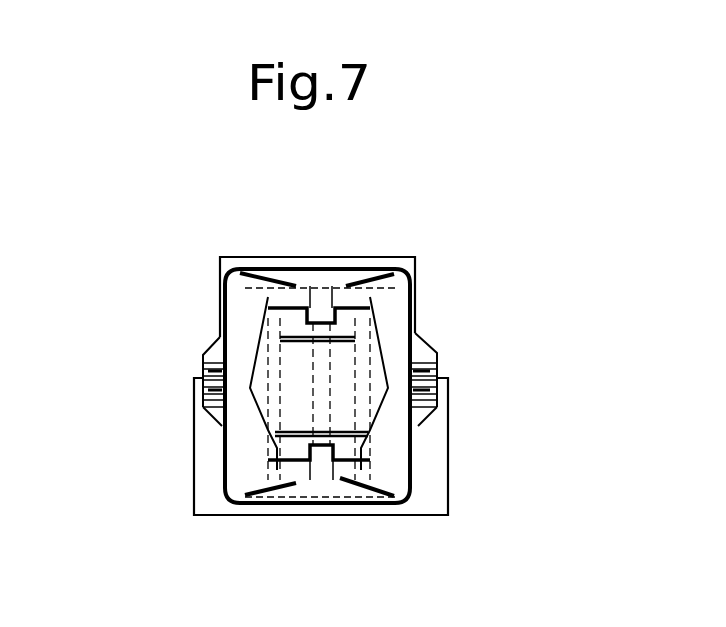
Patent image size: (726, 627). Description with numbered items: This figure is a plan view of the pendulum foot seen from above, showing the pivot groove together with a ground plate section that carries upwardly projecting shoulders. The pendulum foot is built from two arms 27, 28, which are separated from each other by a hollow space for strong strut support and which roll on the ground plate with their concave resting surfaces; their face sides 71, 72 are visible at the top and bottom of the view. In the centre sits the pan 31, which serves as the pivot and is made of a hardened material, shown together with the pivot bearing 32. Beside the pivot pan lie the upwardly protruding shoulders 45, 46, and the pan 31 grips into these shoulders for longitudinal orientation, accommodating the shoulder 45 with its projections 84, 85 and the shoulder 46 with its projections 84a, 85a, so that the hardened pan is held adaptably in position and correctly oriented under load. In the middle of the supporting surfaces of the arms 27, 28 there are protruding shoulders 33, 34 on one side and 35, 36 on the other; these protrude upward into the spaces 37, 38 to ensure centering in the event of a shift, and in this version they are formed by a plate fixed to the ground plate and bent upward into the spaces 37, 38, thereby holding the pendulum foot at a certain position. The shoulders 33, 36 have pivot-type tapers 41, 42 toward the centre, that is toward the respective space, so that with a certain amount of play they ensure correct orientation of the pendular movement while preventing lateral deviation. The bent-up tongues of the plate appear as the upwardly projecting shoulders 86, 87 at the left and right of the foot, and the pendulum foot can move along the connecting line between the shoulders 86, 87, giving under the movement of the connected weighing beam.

The arm 27 is at (225, 292).
The arm 28 is at (412, 448).
The pivot pan 31 is at (355, 330).
The pivot bearing 32 is at (322, 413).
The protruding shoulder 33 is at (213, 425).
The protruding shoulder 34 is at (215, 349).
The protruding shoulder 35 is at (428, 410).
The protruding shoulder 36 is at (430, 353).
The space 37 is at (200, 379).
The space 38 is at (440, 373).
The pivot-type taper 41 is at (203, 407).
The pivot-type taper 42 is at (207, 368).
The upwardly protruding shoulder 45 is at (322, 303).
The upwardly protruding shoulder 46 is at (327, 465).
The face side 71 is at (308, 490).
The face side 72 is at (305, 277).
The projection 84 is at (290, 320).
The projection 84a is at (298, 447).
The projection 85 is at (352, 312).
The projection 85a is at (345, 447).
The upwardly projecting shoulder 86 is at (203, 390).
The upwardly projecting shoulder 87 is at (432, 383).